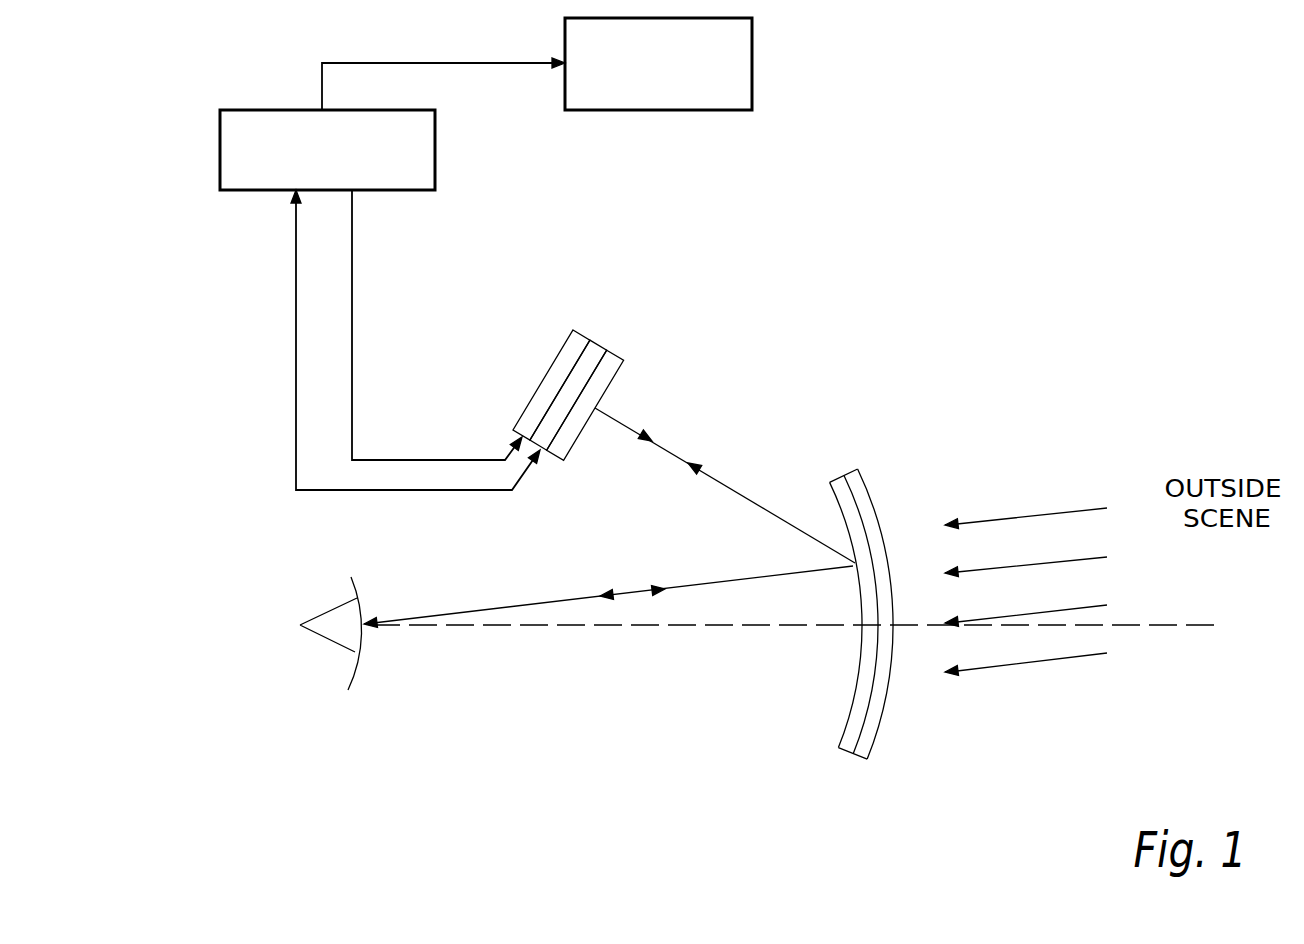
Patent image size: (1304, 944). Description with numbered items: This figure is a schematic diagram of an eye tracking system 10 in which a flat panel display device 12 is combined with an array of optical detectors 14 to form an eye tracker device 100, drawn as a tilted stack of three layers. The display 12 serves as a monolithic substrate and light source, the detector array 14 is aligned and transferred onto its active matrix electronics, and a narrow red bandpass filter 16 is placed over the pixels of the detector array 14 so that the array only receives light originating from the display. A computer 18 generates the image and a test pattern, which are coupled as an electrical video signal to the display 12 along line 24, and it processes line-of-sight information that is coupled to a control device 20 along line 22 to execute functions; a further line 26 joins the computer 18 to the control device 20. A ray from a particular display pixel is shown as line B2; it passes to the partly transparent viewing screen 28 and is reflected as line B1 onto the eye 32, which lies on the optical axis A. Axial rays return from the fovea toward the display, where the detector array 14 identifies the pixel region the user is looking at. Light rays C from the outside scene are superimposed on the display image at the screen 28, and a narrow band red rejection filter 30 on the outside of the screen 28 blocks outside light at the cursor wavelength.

The eye tracking system 10 is at (820, 204).
The flat panel display device 12 is at (580, 333).
The detector array 14 is at (603, 352).
The bandpass filter 16 is at (622, 362).
The computer 18 is at (438, 162).
The control device 20 is at (753, 76).
The line 22 is at (296, 278).
The line 24 is at (352, 280).
The signal line from computer to control device 26 is at (445, 62).
The viewing screen 28 is at (845, 750).
The rejection filter 30 is at (855, 473).
The eye 32 is at (314, 650).
The eye tracker device 100 is at (717, 336).
The line B1 is at (707, 583).
The line B2 is at (733, 492).
The optical axis A is at (717, 627).
The light rays C is at (1030, 517).